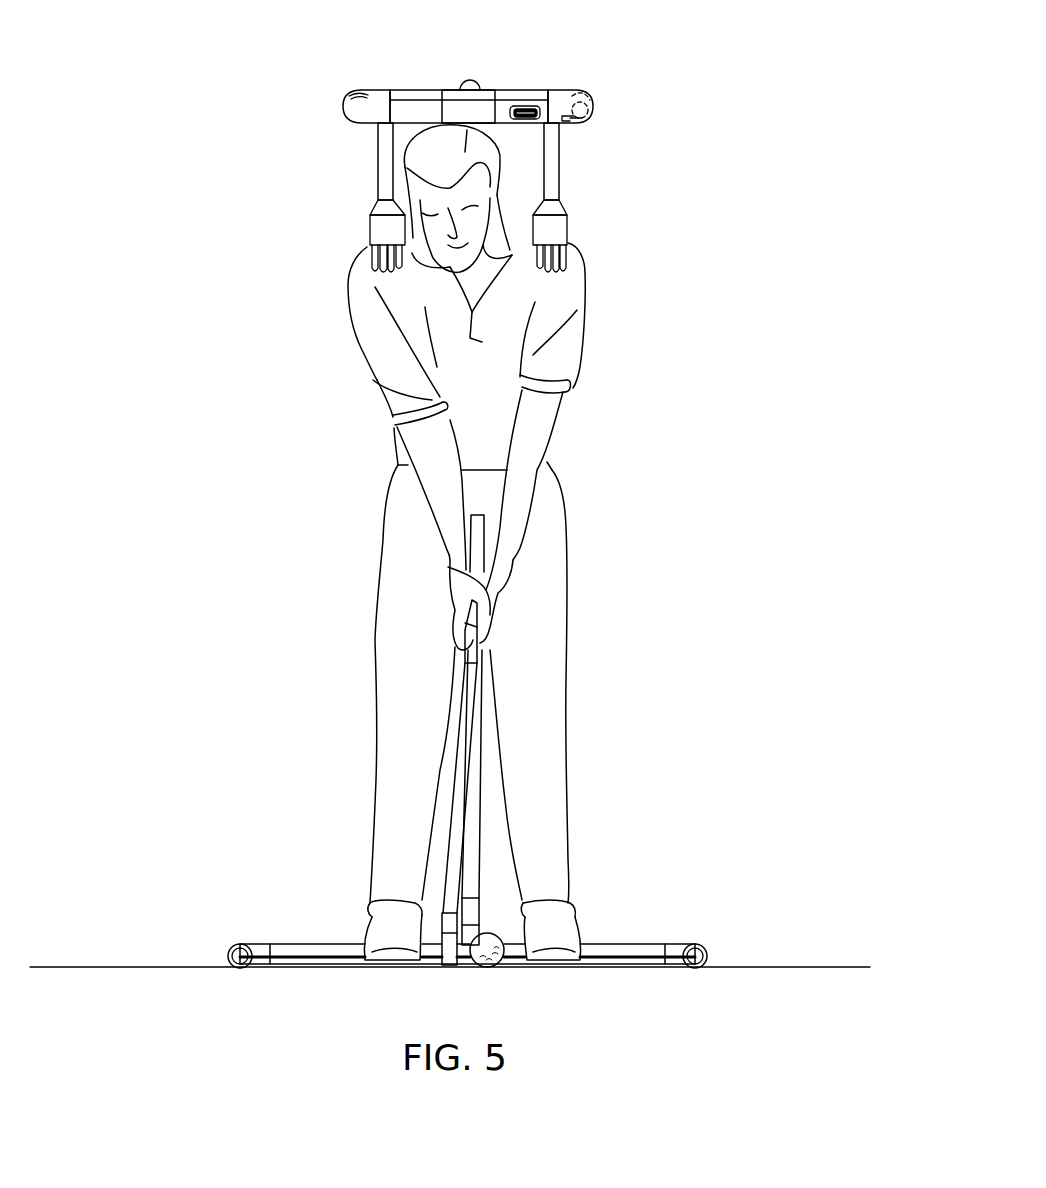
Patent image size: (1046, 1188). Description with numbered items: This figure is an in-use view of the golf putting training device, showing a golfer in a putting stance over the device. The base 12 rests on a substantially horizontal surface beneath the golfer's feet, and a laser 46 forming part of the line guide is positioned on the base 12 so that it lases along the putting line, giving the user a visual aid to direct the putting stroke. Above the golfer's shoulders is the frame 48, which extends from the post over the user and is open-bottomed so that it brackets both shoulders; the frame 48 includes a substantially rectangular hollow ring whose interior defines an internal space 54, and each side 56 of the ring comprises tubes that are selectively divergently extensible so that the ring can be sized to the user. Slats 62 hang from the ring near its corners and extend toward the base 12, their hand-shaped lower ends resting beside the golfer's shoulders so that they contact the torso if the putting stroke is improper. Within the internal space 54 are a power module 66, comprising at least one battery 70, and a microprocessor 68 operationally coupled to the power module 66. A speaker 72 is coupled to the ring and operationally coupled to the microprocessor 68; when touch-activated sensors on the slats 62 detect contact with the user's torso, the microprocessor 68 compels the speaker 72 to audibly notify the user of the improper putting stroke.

The base 12 is at (621, 945).
The laser 46 is at (695, 945).
The frame 48 is at (415, 98).
The internal space 54 is at (556, 112).
The side 56 is at (411, 118).
The slat 62 is at (548, 165).
The power module 66 is at (585, 88).
The microprocessor 68 is at (598, 132).
The battery 70 is at (603, 110).
The speaker 72 is at (522, 100).